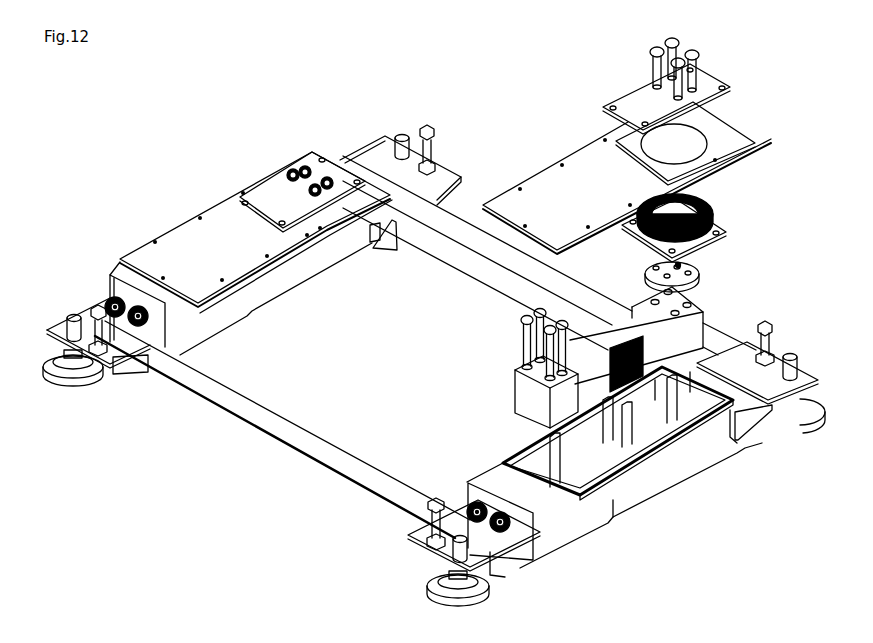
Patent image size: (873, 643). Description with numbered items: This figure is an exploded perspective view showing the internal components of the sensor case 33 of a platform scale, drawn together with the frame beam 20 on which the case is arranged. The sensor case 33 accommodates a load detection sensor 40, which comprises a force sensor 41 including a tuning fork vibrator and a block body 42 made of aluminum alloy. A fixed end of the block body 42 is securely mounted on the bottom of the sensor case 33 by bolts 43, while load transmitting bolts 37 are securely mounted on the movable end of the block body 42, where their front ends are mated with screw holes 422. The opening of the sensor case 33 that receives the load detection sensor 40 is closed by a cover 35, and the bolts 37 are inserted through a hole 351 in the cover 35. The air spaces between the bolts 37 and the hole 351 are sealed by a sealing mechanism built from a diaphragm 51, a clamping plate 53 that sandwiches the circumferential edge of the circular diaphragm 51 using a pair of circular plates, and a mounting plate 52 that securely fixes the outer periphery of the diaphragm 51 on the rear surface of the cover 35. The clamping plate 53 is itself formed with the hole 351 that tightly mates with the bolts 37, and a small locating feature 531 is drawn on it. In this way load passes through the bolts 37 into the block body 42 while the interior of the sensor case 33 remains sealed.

The frame beam 20 is at (217, 410).
The sensor case 33 is at (278, 297).
The cover 35 is at (173, 227).
The load transmitting bolts 37 is at (655, 66).
The hole 351 is at (692, 140).
The diaphragm 51 is at (712, 217).
The mounting plate 52 is at (722, 240).
The clamping plate 53 is at (645, 269).
The locating pin 531 is at (651, 260).
The load detection sensor 40 is at (794, 313).
The force sensor 41 is at (703, 343).
The block body 42 is at (703, 323).
The screw holes 422 is at (691, 306).
The bolts 43 is at (522, 352).